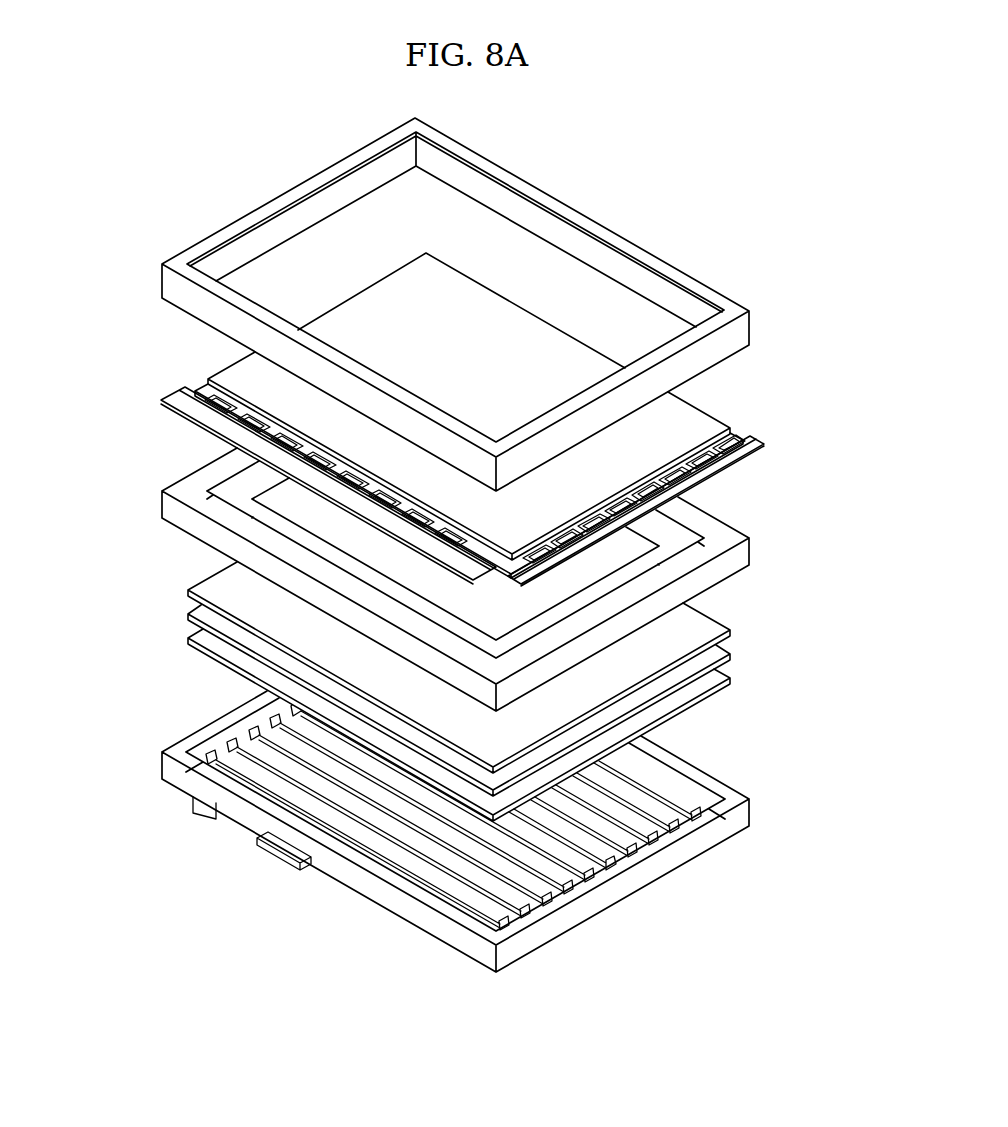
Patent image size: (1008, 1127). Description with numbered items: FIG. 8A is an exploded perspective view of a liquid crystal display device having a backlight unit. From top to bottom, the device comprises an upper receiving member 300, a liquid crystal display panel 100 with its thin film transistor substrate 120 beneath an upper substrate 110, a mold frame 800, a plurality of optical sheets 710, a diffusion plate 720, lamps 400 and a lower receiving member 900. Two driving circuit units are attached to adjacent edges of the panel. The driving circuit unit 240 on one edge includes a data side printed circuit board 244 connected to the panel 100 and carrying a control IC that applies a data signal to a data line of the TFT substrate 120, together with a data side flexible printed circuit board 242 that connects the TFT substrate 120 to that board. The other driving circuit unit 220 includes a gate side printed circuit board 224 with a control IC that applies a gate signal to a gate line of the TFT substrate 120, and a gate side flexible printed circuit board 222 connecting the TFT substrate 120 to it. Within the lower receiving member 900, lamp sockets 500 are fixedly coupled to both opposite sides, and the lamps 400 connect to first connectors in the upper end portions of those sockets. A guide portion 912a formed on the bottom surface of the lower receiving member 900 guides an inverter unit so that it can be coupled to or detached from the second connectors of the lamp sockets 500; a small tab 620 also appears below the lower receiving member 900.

The upper receiving member 300 is at (755, 328).
The liquid crystal display panel 100 is at (552, 415).
The upper substrate 110 is at (706, 416).
The thin film transistor substrate 120 is at (718, 428).
The driving circuit unit 240 is at (253, 482).
The data side flexible printed circuit board 242 is at (200, 398).
The data side printed circuit board 244 is at (195, 410).
The driving circuit unit 220 is at (718, 510).
The gate side printed circuit board 224 is at (752, 445).
The gate side flexible printed circuit board 222 is at (760, 462).
The mold frame 800 is at (753, 543).
The optical sheets 710 is at (732, 630).
The diffusion plate 720 is at (732, 680).
The lower receiving member 900 is at (752, 805).
The lamp sockets 500 is at (697, 818).
The lamps 400 is at (205, 763).
The guide portion 912a is at (197, 828).
The connector 620 is at (286, 868).